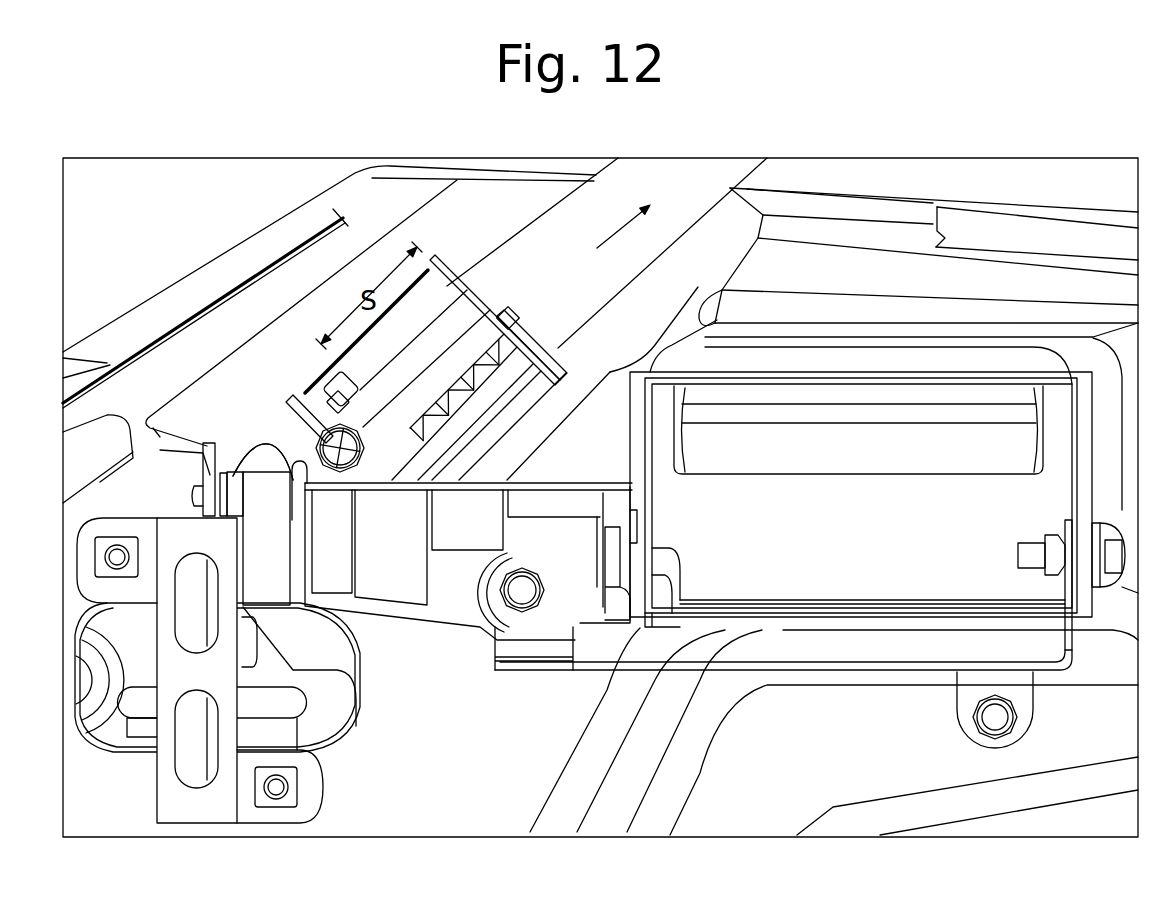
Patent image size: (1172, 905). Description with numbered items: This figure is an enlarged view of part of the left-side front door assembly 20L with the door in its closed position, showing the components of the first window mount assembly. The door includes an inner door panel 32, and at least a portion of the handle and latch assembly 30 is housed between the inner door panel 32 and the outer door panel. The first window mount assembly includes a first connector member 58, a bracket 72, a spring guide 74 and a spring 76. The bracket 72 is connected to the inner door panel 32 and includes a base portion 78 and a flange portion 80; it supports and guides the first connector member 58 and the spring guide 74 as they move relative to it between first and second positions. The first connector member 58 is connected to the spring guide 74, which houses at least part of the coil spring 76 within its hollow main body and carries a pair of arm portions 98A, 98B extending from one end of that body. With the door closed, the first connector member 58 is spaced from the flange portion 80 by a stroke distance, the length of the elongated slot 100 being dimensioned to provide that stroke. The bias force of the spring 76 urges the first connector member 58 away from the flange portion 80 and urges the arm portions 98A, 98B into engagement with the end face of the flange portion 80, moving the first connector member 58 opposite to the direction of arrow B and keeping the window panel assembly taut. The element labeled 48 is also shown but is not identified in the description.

The left-side front door assembly 20L is at (1083, 123).
The handle and latch assembly 30 is at (514, 703).
The inner door panel 32 is at (222, 259).
The rail 48 is at (678, 172).
The first connector member 58 is at (358, 380).
The bracket 72 is at (290, 445).
The spring guide 74 is at (497, 410).
The spring 76 is at (457, 438).
The base portion 78 is at (263, 462).
The flange portion 80 is at (486, 278).
The arm portion 98A is at (518, 312).
The arm portion 98B is at (560, 350).
The elongated slot 100 is at (463, 367).